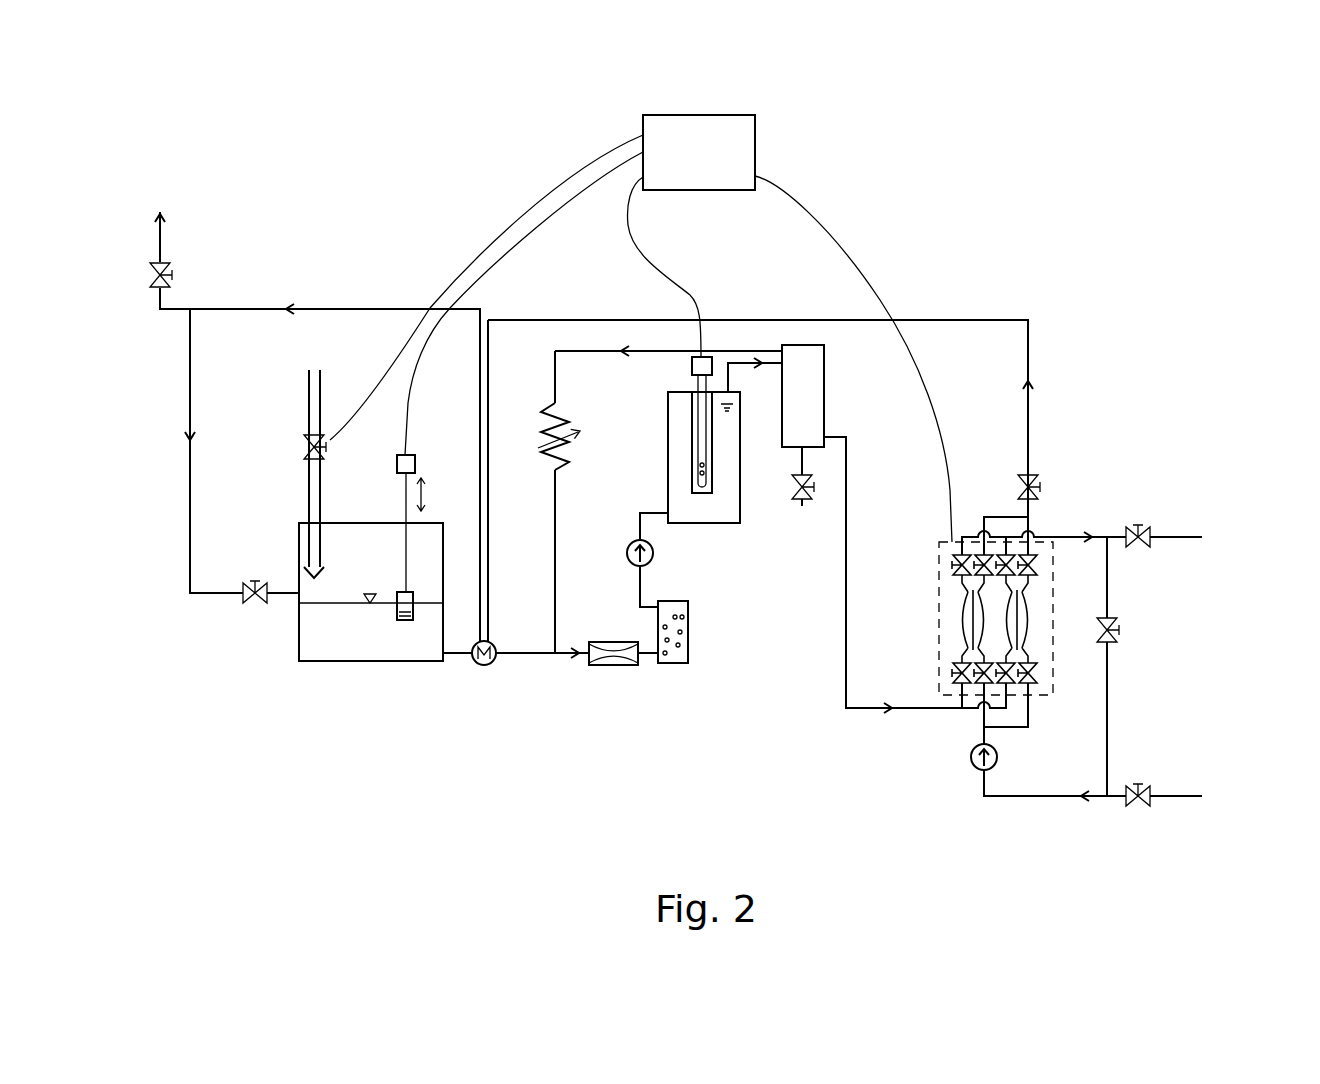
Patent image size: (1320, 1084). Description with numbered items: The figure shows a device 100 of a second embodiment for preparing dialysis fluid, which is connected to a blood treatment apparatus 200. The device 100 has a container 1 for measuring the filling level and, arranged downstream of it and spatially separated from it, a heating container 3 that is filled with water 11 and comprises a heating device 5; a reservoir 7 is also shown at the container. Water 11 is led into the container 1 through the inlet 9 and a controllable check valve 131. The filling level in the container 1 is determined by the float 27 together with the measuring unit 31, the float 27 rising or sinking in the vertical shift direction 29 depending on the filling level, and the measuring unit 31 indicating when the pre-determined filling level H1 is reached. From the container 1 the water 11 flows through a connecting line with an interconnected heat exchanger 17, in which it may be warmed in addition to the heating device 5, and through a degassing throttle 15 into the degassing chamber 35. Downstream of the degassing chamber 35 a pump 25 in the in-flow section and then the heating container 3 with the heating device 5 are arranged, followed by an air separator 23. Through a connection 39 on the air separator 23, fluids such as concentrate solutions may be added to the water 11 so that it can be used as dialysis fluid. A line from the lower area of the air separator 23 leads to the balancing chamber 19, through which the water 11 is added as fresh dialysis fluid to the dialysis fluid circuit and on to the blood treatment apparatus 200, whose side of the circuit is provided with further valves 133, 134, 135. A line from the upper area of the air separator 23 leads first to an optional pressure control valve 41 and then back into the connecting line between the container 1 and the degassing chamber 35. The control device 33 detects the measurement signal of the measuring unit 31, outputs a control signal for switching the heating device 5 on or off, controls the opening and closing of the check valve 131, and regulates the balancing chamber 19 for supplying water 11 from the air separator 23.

The container 1 is at (403, 661).
The heating container 3 is at (740, 503).
The heating device 5 is at (703, 493).
The reservoir 7 is at (299, 548).
The inlet 9 is at (307, 490).
The water 11 is at (315, 638).
The degassing throttle 15 is at (602, 665).
The heat exchanger 17 is at (490, 663).
The balancing chamber 19 is at (1055, 577).
The air separator 23 is at (824, 390).
The pump in the in-flow section 25 is at (631, 547).
The float 27 is at (400, 620).
The vertical shift direction of the float 29 is at (421, 468).
The measuring unit 31 is at (397, 455).
The control device 33 is at (690, 165).
The degassing chamber 35 is at (675, 663).
The connection 39 is at (803, 506).
The pressure control valve 41 is at (567, 426).
The apparatus 100 is at (992, 132).
The check valve 131 is at (303, 447).
The valve 133 is at (1146, 530).
The valve 134 is at (1143, 807).
The valve 135 is at (1115, 640).
The blood treatment apparatus 200 is at (1213, 684).
The pre-determined filling level H1 is at (340, 603).